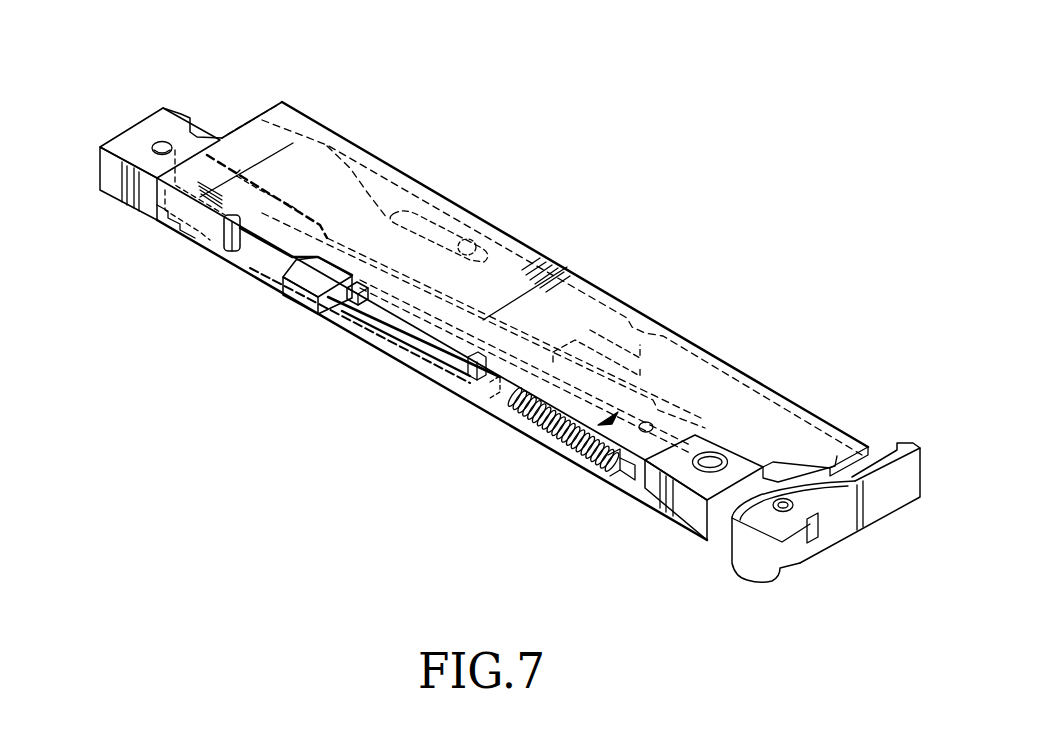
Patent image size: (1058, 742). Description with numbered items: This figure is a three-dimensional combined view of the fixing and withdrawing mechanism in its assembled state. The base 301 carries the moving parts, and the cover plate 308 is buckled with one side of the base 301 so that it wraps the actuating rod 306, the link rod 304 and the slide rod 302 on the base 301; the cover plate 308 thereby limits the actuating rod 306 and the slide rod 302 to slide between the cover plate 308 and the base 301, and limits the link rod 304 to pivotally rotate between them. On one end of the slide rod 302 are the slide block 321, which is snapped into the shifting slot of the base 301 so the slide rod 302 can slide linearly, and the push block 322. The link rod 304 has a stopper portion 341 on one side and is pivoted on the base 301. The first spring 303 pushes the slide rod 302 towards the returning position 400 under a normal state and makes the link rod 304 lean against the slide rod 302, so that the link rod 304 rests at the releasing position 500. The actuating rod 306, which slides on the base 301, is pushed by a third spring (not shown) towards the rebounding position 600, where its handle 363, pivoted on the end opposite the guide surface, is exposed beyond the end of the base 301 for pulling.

The base 301 is at (136, 210).
The slide rod 302 is at (398, 343).
The first spring 303 is at (545, 432).
The link rod 304 is at (580, 455).
The actuating rod 306 is at (742, 405).
The cover plate 308 is at (462, 205).
The slide block 321 is at (280, 265).
The push block 322 is at (307, 296).
The stopper portion 341 is at (354, 298).
The handle 363 is at (875, 503).
The returning position 400 is at (470, 420).
The releasing position 500 is at (270, 98).
The rebounding position 600 is at (293, 100).